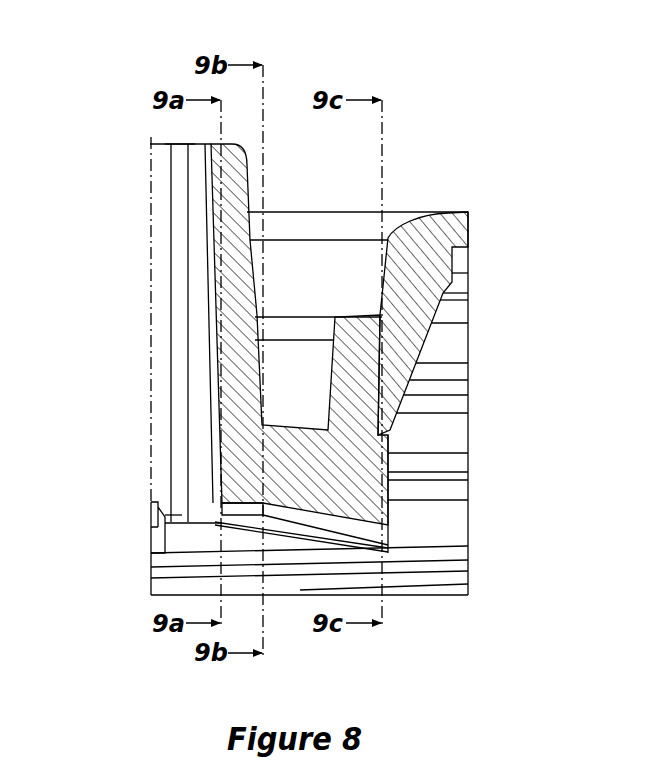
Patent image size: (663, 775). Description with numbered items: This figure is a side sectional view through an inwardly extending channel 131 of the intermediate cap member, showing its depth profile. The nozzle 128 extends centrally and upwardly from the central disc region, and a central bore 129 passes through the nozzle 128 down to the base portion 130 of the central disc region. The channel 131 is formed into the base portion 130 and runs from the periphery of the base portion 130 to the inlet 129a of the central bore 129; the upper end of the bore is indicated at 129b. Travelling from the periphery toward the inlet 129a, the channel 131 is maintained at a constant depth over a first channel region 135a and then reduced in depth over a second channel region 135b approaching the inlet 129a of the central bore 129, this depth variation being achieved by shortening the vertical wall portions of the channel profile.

The nozzle 128 is at (233, 165).
The central bore 129 is at (168, 432).
The inlet 129a is at (158, 508).
The sleeve upper end 129b is at (178, 144).
The base portion 130 is at (258, 508).
The channel 131 is at (385, 553).
The first channel region 135a is at (338, 519).
The second channel region 135b is at (238, 504).